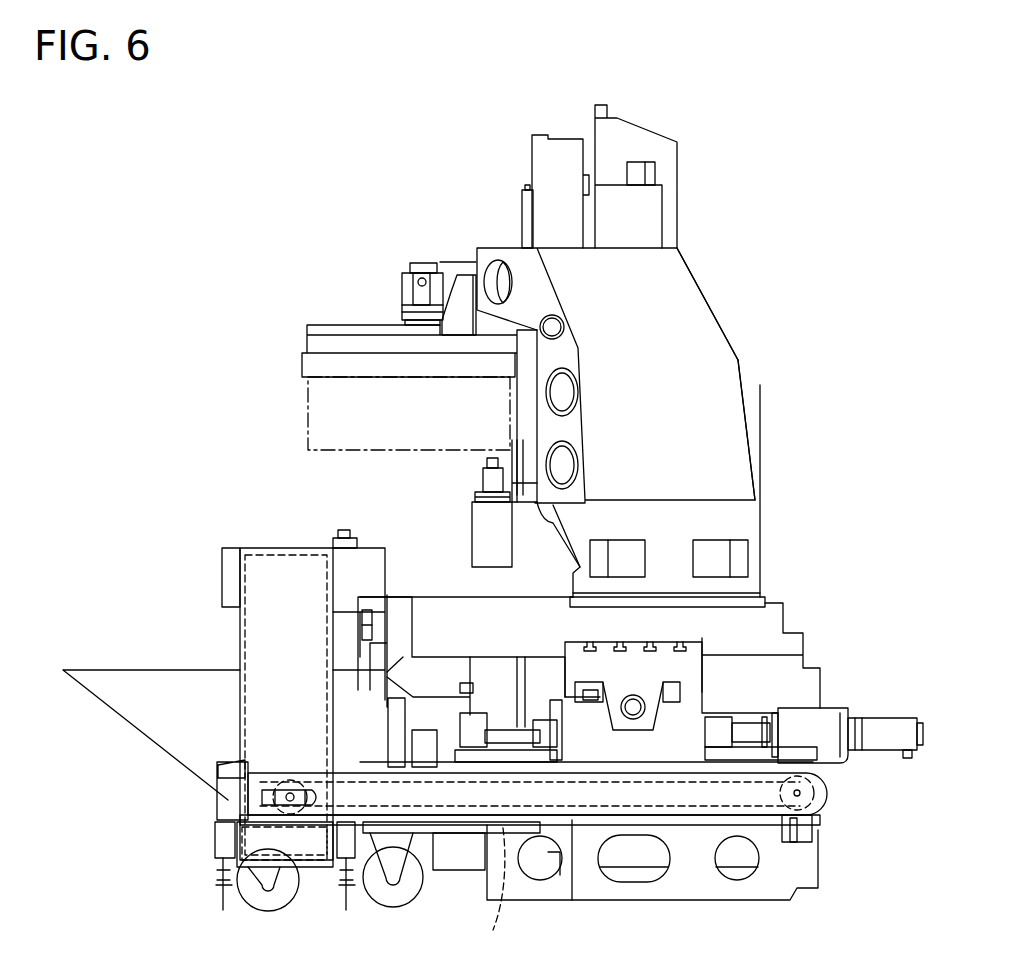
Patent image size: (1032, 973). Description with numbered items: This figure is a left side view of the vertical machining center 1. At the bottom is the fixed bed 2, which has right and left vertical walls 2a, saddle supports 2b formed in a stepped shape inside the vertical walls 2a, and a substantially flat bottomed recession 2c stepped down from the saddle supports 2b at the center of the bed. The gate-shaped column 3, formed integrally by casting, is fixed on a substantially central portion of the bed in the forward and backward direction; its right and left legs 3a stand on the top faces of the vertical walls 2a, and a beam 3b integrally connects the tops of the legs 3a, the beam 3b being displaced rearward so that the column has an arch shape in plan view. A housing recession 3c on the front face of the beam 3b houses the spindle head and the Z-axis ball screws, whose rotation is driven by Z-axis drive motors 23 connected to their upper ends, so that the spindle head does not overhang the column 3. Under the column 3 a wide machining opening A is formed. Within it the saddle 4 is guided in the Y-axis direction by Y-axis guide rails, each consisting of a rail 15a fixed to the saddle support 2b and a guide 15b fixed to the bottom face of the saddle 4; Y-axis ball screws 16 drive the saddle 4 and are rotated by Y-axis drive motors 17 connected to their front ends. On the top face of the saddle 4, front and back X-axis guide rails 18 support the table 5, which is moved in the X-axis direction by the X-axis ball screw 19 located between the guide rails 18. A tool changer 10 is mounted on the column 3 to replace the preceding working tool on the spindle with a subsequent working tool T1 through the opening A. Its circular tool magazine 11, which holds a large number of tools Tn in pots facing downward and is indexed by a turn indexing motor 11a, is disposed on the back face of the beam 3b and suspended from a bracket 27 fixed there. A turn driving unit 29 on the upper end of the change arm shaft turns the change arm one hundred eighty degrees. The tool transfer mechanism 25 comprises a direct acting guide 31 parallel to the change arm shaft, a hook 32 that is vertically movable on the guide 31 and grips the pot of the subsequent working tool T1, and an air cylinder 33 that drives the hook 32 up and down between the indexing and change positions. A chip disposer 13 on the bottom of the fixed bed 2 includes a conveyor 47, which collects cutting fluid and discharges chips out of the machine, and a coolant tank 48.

The vertical machining center 1 is at (324, 160).
The fixed bed 2 is at (823, 850).
The vertical wall 2a is at (793, 618).
The saddle support 2b is at (823, 768).
The bottomed recession 2c is at (690, 820).
The column 3 is at (723, 320).
The leg 3a is at (762, 545).
The beam 3b is at (693, 268).
The housing recession 3c is at (740, 360).
The saddle 4 is at (700, 708).
The table 5 is at (691, 637).
The tool changer 10 is at (443, 262).
The tool magazine 11 is at (302, 340).
The turn indexing motor 11a is at (402, 293).
The chip disposer 13 is at (218, 540).
The rail 15a is at (797, 745).
The guide 15b is at (745, 722).
The Y-axis ball screw 16 is at (503, 733).
The Y-axis drive motor 17 is at (887, 718).
The X-axis guide rail 18 is at (577, 680).
The X-axis ball screw 19 is at (631, 692).
The Z-axis drive motor 23 is at (662, 203).
The tool transfer mechanism 25 is at (513, 207).
The bracket 27 is at (467, 277).
The turn driving unit 29 is at (530, 167).
The direct acting guide 31 is at (537, 435).
The hook 32 is at (540, 525).
The air cylinder 33 is at (537, 362).
The conveyor 47 is at (492, 892).
The coolant tank 48 is at (572, 900).
The machining opening A is at (768, 608).
The tools Tn is at (308, 425).
The subsequent working tool T1 is at (512, 527).